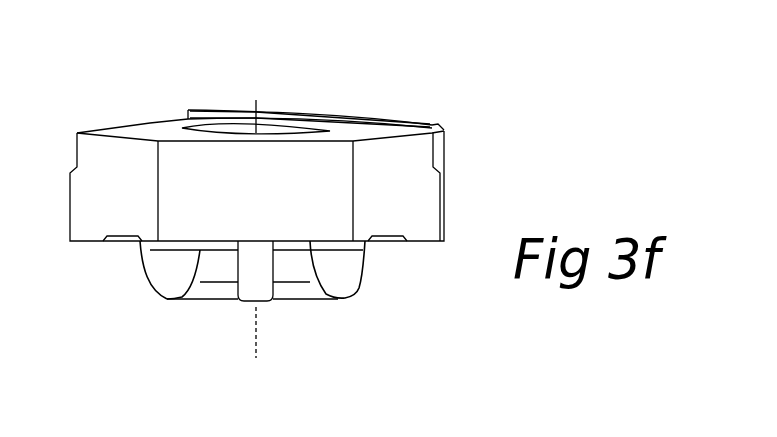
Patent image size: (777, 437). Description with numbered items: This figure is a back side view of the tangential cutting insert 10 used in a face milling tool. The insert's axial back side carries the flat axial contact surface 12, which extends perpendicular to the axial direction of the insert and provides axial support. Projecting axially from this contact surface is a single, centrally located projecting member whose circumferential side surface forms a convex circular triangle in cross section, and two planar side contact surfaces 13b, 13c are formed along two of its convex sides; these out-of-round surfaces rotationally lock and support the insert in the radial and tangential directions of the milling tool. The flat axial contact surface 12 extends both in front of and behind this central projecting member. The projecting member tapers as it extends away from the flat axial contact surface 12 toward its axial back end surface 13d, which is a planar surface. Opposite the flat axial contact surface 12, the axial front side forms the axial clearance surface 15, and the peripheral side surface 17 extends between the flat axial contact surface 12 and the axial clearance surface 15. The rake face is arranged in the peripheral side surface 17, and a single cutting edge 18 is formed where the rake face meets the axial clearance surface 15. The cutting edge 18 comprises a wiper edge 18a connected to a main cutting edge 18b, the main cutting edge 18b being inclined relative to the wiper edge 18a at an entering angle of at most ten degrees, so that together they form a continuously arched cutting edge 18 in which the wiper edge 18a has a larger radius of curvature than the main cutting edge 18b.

The tangential cutting insert 10 is at (480, 92).
The flat axial contact surface 12 is at (413, 242).
The side contact surface 13b is at (162, 266).
The side contact surface 13c is at (348, 267).
The axial back end surface 13d is at (282, 302).
The axial clearance surface 15 is at (148, 132).
The peripheral side surface 17 is at (412, 190).
The cutting edge 18 is at (297, 68).
The wiper edge 18a is at (293, 101).
The main cutting edge 18b is at (445, 119).